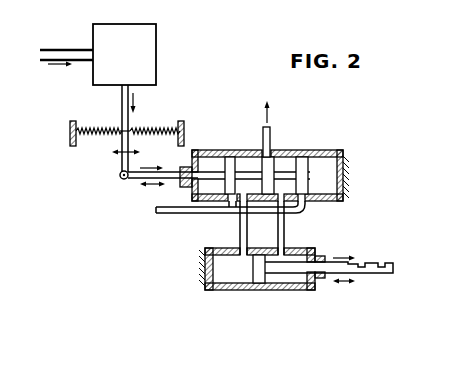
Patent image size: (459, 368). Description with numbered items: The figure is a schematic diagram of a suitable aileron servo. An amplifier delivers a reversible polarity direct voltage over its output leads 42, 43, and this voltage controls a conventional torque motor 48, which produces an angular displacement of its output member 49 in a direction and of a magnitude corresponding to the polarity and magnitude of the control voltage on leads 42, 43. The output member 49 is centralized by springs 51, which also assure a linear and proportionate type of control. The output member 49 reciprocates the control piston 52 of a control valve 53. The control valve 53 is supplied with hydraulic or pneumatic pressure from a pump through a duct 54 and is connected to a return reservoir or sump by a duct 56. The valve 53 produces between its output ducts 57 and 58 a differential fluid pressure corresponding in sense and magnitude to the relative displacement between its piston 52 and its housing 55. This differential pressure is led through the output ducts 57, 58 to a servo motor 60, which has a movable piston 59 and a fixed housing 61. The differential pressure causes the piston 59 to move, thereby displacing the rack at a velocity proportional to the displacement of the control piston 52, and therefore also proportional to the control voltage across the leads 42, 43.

The output lead 42 is at (78, 48).
The output lead 43 is at (45, 59).
The torque motor 48 is at (156, 32).
The output member 49 is at (121, 108).
The springs 51 is at (128, 131).
The control piston 52 is at (286, 172).
The control valve 53 is at (285, 175).
The duct 54 is at (184, 214).
The housing 55 is at (325, 201).
The duct 56 is at (270, 138).
The output duct 57 is at (284, 227).
The output duct 58 is at (240, 227).
The movable piston 59 is at (259, 283).
The servo motor 60 is at (312, 313).
The fixed housing 61 is at (220, 290).